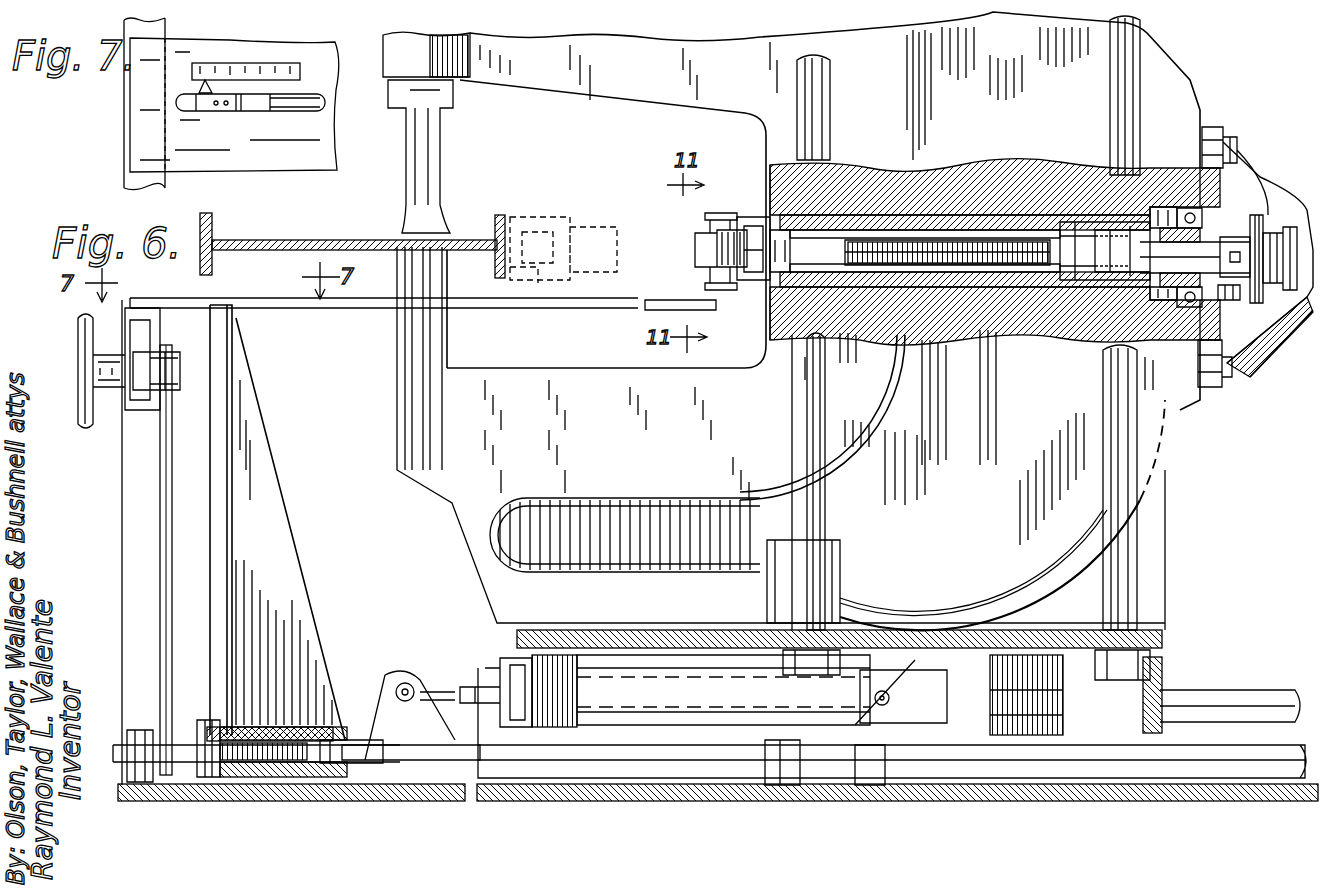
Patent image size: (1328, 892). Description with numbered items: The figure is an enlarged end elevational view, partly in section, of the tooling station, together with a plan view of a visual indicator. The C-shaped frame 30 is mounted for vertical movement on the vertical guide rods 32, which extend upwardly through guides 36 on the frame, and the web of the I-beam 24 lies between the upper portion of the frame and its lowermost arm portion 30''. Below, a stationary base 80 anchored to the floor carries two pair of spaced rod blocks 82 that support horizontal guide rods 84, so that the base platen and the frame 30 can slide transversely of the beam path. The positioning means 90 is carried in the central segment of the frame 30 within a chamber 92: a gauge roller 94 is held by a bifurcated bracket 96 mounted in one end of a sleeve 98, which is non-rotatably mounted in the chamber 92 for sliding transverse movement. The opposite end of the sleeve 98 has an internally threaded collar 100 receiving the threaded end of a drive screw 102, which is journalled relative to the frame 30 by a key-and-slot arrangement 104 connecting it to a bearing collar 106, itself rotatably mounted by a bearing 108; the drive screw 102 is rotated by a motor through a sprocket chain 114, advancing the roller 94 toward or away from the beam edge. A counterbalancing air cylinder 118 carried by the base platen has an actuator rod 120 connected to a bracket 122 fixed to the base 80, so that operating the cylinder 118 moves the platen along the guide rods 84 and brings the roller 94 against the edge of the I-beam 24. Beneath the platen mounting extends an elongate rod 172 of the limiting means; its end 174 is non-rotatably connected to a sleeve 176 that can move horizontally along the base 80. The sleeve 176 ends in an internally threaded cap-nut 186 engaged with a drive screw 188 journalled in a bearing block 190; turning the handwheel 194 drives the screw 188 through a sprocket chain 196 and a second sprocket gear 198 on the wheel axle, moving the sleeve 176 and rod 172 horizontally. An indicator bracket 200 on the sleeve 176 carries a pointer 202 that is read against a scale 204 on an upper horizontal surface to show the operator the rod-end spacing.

In FIG. 6, the I-beam 24 is at (333, 240).
In FIG. 6, the C-shaped frame 30 is at (855, 321).
In FIG. 6, the lowermost arm portion 30'' is at (625, 514).
In FIG. 6, the guide rods 32 is at (817, 95).
In FIG. 6, the guides 36 is at (810, 570).
In FIG. 6, the stationary base 80 is at (460, 802).
In FIG. 6, the rod blocks 82 is at (575, 655).
In FIG. 6, the horizontal guide rods 84 is at (1214, 690).
In FIG. 6, the positioning means 90 is at (752, 303).
In FIG. 6, the chamber 92 is at (860, 215).
In FIG. 6, the gauge roller 94 is at (697, 250).
In FIG. 6, the bifurcated bracket 96 is at (746, 220).
In FIG. 6, the sleeve 98 is at (982, 225).
In FIG. 6, the internally threaded collar 100 is at (1112, 215).
In FIG. 6, the drive screw 102 is at (992, 300).
In FIG. 6, the key-and-slot arrangement 104 is at (1220, 250).
In FIG. 6, the bearing collar 106 is at (1140, 320).
In FIG. 6, the bearing 108 is at (1232, 368).
In FIG. 6, the sprocket chain 114 is at (1252, 305).
In FIG. 6, the counterbalancing air cylinder 118 is at (642, 692).
In FIG. 6, the actuator rod 120 is at (480, 690).
In FIG. 6, the bracket 122 is at (375, 700).
In FIG. 6, the elongate rod 172 is at (668, 752).
In FIG. 6, the rod end 174 is at (355, 765).
In FIG. 6, the sleeve 176 is at (305, 778).
In FIG. 6, the cap-nut 186 is at (214, 778).
In FIG. 6, the drive screw 188 is at (268, 762).
In FIG. 6, the bearing block 190 is at (140, 782).
In FIG. 6, the handwheel 194 is at (84, 428).
In FIG. 6, the sprocket chain 196 is at (160, 480).
In FIG. 6, the second sprocket gear 198 is at (162, 340).
In FIG. 7, the bracket 200 is at (257, 111).
In FIG. 6, the bracket 200 is at (265, 492).
In FIG. 7, the pointer 202 is at (200, 88).
In FIG. 7, the scale 204 is at (232, 64).